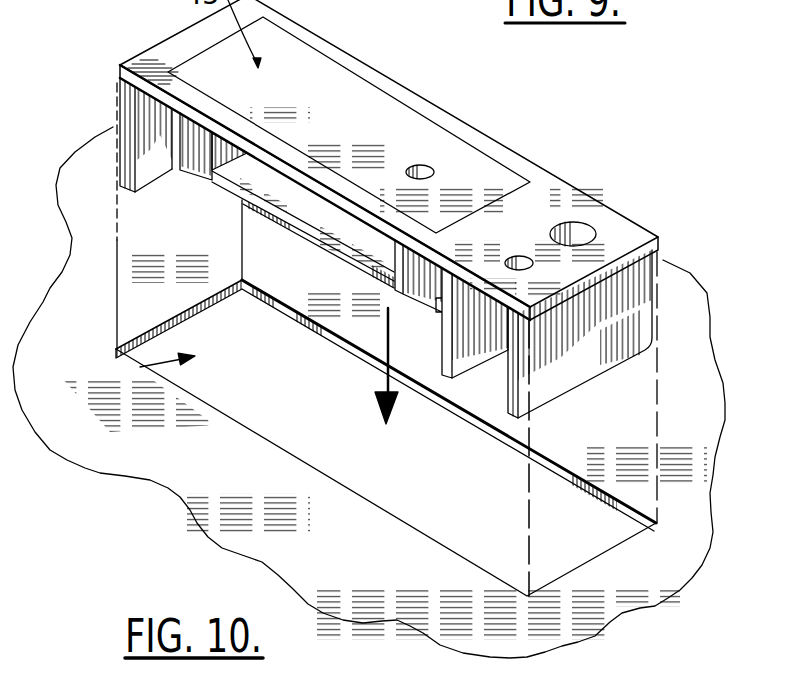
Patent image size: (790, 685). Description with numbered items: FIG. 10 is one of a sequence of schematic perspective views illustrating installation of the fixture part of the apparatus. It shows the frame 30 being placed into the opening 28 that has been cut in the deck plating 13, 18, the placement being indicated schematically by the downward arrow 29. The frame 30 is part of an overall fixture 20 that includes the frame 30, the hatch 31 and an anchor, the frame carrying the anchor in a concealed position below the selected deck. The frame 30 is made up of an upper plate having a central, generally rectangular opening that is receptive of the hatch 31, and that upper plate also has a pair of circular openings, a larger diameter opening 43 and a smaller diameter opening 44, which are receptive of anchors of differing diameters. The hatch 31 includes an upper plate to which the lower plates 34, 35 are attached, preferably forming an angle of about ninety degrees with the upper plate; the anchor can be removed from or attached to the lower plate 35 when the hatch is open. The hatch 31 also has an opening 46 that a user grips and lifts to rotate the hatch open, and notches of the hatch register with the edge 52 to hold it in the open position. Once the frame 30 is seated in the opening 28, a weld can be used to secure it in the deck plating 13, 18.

The deck plate 13 is at (369, 392).
The deck plating 18 is at (203, 510).
The fixture 20 is at (361, 209).
The opening 28 is at (140, 367).
The arrow 29 is at (386, 387).
The frame 30 is at (150, 57).
The hatch 31 is at (383, 120).
The lower plate 34 is at (199, 153).
The lower plate 35 is at (432, 288).
The larger diameter opening 43 is at (580, 228).
The smaller diameter opening 44 is at (521, 256).
The opening 46 is at (430, 164).
The edge 52 is at (449, 540).